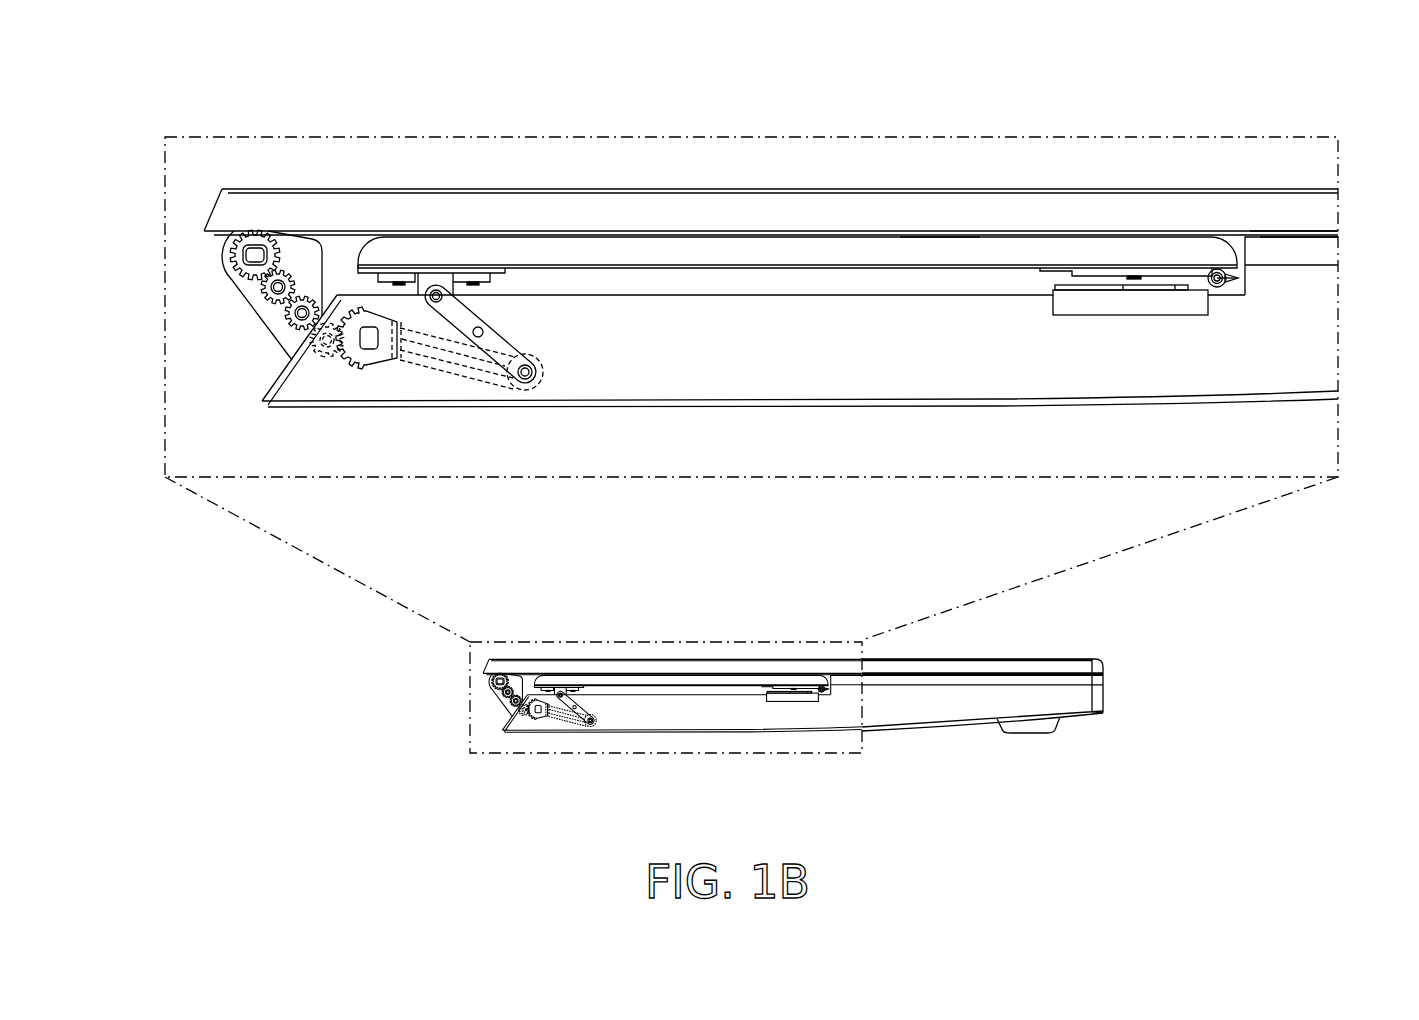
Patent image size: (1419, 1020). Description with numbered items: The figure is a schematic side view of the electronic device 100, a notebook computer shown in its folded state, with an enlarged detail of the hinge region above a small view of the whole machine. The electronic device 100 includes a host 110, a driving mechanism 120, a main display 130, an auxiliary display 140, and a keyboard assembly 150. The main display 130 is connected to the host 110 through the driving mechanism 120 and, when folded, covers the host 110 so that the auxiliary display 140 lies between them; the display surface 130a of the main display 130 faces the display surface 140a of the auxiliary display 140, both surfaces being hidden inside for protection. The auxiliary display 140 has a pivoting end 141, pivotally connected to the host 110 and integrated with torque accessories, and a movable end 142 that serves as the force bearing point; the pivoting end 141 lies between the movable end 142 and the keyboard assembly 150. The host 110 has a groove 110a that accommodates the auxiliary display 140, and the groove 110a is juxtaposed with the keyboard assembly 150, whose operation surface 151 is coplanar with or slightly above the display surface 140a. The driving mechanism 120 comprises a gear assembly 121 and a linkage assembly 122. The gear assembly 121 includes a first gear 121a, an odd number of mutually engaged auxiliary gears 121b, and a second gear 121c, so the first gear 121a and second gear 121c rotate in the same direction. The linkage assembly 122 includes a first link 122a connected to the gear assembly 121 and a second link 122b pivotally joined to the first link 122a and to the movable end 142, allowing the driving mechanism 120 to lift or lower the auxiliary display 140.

The electronic device 100 is at (1290, 770).
The host 110 is at (1317, 327).
The groove 110a is at (1203, 272).
The driving mechanism 120 is at (98, 30).
The gear assembly 121 is at (189, 244).
The first gear 121a is at (252, 228).
The auxiliary gears 121b is at (312, 345).
The second gear 121c is at (347, 362).
The linkage assembly 122 is at (376, 332).
The first link 122a is at (453, 370).
The second link 122b is at (453, 370).
The main display 130 is at (1032, 207).
The display surface of the main display 130a is at (1274, 238).
The auxiliary display 140 is at (757, 250).
The display surface of the auxiliary display 140a is at (938, 230).
The pivoting end 141 is at (1213, 253).
The movable end 142 is at (398, 250).
The keyboard assembly 150 is at (1325, 253).
The operation surface 151 is at (1310, 232).